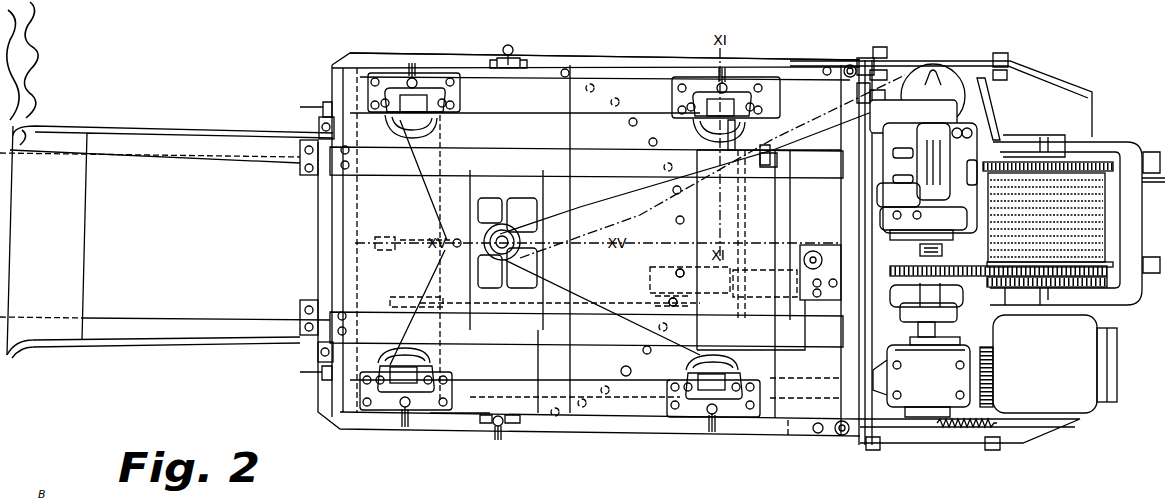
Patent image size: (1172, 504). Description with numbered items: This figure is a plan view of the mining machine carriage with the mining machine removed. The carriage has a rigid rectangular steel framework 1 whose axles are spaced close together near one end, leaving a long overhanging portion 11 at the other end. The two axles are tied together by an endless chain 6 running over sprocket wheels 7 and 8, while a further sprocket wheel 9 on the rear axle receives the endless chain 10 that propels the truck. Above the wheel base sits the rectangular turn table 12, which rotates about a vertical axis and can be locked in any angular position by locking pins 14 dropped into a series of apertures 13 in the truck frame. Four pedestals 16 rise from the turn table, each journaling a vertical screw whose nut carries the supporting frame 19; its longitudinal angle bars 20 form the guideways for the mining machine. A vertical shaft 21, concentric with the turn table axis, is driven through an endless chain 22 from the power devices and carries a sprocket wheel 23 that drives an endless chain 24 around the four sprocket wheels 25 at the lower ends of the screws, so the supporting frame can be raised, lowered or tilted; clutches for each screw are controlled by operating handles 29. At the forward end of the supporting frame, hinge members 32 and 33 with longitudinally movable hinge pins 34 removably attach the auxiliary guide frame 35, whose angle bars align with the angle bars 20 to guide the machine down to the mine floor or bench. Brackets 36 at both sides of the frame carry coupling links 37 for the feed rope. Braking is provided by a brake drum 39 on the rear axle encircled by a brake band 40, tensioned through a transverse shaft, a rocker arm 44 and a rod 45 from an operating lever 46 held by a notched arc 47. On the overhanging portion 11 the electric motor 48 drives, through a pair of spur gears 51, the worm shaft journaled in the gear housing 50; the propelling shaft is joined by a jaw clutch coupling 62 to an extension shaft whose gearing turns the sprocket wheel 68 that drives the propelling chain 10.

The rectangular steel framework 1 is at (687, 447).
The endless chain 6 is at (494, 305).
The sprocket wheel 7 is at (660, 302).
The sprocket wheel 8 is at (414, 291).
The sprocket wheel 9 is at (712, 166).
The endless chain 10 is at (706, 240).
The overhanging portion 11 is at (1082, 110).
The turn table 12 is at (534, 87).
The apertures 13 is at (626, 376).
The locking pins 14 is at (509, 60).
The pedestals 16 is at (427, 100).
The supporting frame 19 is at (443, 215).
The angle bars 20 is at (496, 162).
The vertical shaft 21 is at (522, 243).
The endless chain 22 is at (648, 232).
The sprocket wheel 23 is at (499, 230).
The endless chain 24 is at (593, 292).
The sprocket wheels 25 is at (460, 430).
The operating handle 29 is at (413, 63).
The hinge members 32 is at (303, 171).
The hinge members 33 is at (318, 126).
The hinge pins 34 is at (322, 104).
The auxiliary guide frame 35 is at (203, 150).
The brackets 36 is at (850, 65).
The coupling links 37 is at (827, 67).
The brake drum 39 is at (676, 272).
The brake band 40 is at (660, 283).
The rocker arm 44 is at (805, 423).
The rod 45 is at (805, 392).
The operating lever 46 is at (912, 387).
The notched arc 47 is at (948, 420).
The electric motor 48 is at (1100, 358).
The gear housing 50 is at (890, 357).
The spur gears 51 is at (993, 388).
The jaw clutch coupling 62 is at (950, 268).
The sprocket wheel 68 is at (915, 250).